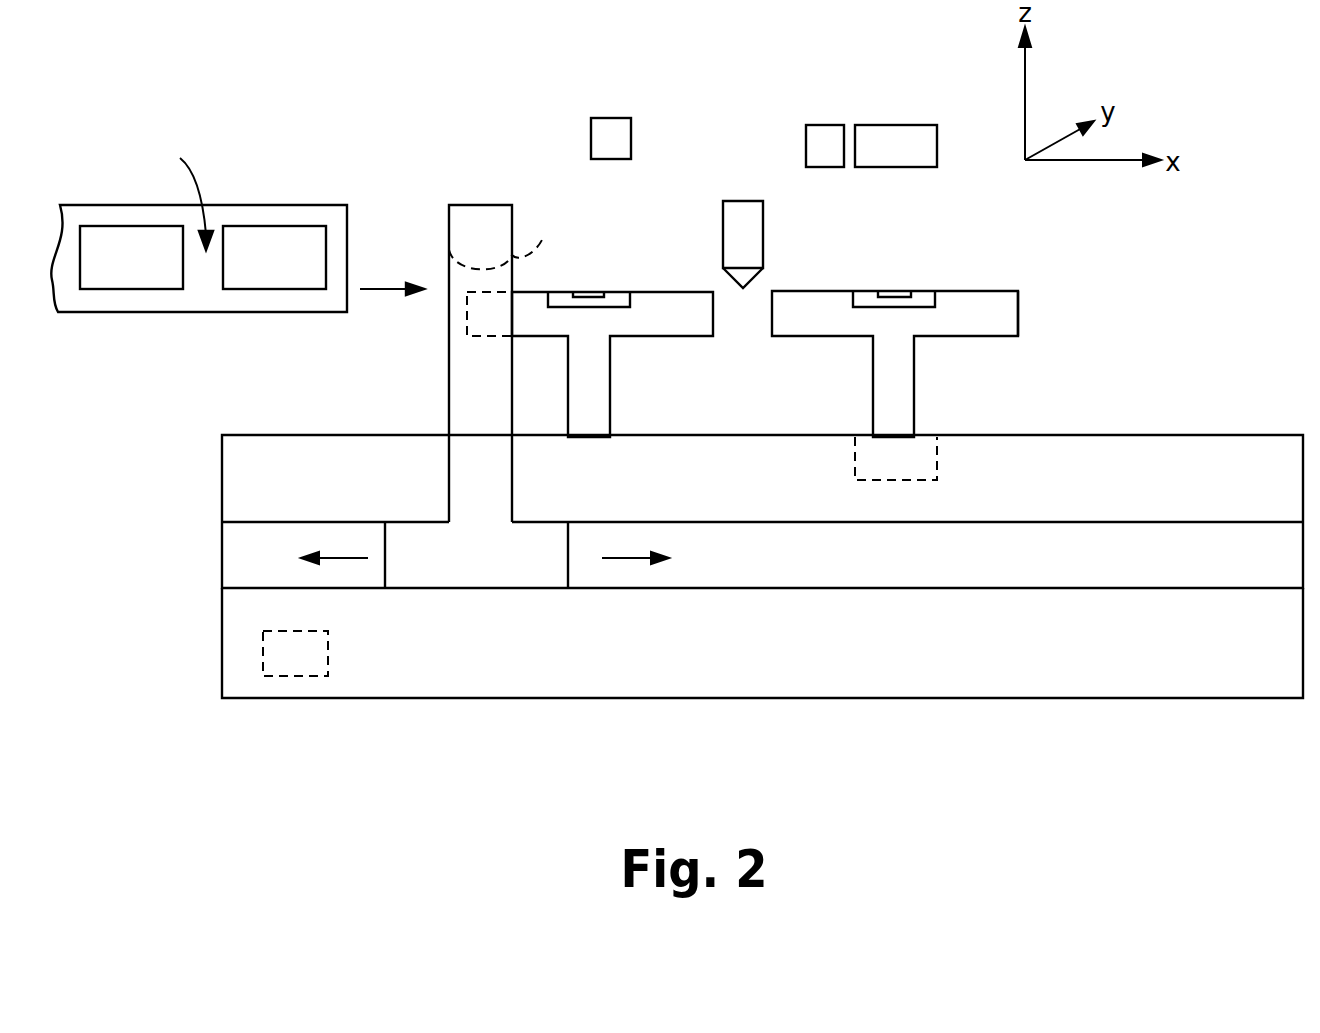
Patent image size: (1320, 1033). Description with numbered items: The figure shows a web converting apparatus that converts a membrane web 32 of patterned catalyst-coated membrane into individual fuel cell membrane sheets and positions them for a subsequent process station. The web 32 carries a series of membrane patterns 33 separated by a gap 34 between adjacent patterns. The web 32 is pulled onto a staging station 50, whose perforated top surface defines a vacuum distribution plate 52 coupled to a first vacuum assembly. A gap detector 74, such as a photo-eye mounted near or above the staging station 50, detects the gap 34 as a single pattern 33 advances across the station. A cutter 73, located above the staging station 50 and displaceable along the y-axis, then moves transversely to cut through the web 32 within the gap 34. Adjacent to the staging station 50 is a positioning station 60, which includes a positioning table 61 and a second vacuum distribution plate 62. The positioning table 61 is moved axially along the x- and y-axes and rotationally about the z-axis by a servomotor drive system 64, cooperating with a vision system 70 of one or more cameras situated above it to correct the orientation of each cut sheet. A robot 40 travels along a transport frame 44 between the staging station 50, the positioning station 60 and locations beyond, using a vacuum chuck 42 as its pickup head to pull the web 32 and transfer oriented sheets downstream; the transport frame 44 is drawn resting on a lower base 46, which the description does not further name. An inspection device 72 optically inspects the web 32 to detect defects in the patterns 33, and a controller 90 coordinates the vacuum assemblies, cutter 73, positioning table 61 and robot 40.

The membrane web 32 is at (113, 203).
The membrane pattern 33 is at (273, 277).
The gap 34 is at (177, 190).
The robot 40 is at (449, 372).
The vacuum chuck 42 is at (543, 238).
The transport frame 44 is at (251, 522).
The base 46 is at (407, 698).
The staging station 50 is at (610, 382).
The vacuum distribution plate 52 is at (615, 308).
The positioning station 60 is at (914, 390).
The positioning table 61 is at (1018, 311).
The vacuum distribution plate 62 is at (913, 291).
The servomotor drive system 64 is at (940, 459).
The vision system 70 is at (890, 125).
The inspection device 72 is at (825, 125).
The cutter 73 is at (748, 201).
The gap detector 74 is at (607, 118).
The controller 90 is at (295, 678).